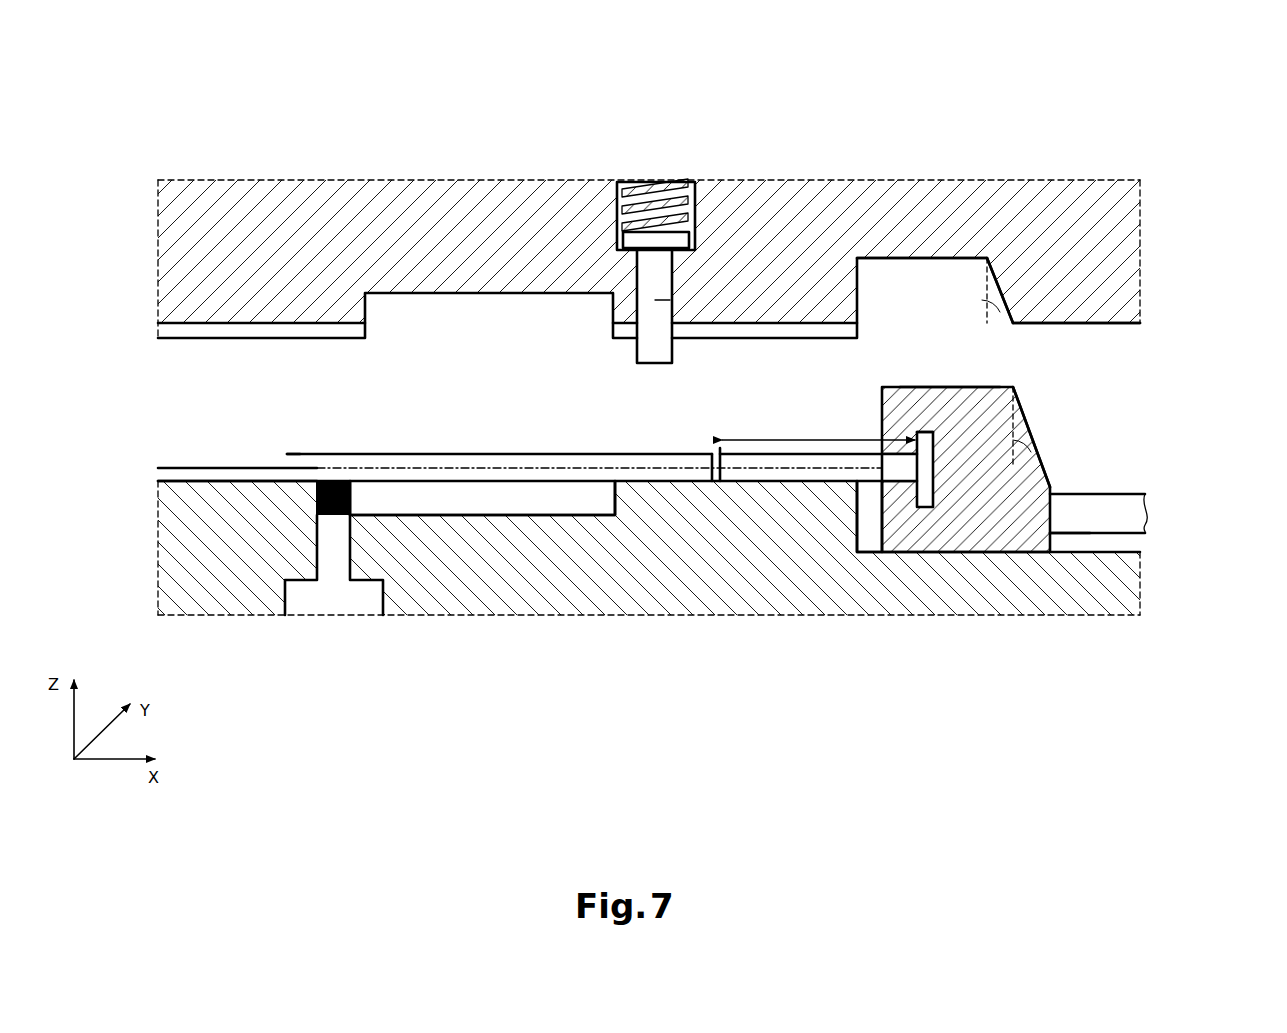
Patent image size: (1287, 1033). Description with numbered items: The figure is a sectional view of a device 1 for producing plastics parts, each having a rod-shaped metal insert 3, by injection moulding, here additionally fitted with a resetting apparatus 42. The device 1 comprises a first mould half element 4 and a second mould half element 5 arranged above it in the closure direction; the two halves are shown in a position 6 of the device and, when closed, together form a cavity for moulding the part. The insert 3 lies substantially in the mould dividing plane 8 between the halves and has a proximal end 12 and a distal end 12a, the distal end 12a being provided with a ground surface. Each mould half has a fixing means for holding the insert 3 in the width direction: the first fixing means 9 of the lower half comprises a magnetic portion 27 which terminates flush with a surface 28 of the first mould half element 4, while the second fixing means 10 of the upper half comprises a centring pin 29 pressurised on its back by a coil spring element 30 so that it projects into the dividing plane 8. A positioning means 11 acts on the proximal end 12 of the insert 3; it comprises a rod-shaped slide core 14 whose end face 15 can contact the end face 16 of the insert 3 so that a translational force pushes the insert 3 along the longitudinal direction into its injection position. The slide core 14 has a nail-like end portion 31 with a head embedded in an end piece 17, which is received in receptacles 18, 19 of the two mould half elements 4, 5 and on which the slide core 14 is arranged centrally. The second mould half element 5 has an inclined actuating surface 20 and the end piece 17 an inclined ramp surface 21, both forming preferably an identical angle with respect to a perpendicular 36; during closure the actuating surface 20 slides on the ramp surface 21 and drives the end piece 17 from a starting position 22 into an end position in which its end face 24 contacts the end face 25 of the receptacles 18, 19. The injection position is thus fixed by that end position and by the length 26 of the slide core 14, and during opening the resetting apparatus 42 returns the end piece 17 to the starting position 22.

The device 1 is at (160, 80).
The rod-shaped metal insert 3 is at (576, 484).
The first mould half element 4 is at (795, 605).
The second mould half element 5 is at (223, 195).
The position of the device 6 is at (203, 365).
The mould dividing plane 8 is at (185, 390).
The first fixing means 9 is at (350, 598).
The second fixing means 10 is at (655, 300).
The positioning means 11 is at (938, 392).
The proximal end 12 is at (707, 472).
The distal end 12a is at (297, 467).
The slide core 14 is at (753, 475).
The end face of the slide core 15 is at (720, 480).
The end face of the insert 16 is at (718, 440).
The end piece 17 is at (992, 533).
The receptacle of the second mould half element 18 is at (873, 268).
The receptacle of the first mould half element 19 is at (870, 540).
The actuating surface 20 is at (1013, 323).
The ramp surface 21 is at (1013, 400).
The starting position 22 is at (1158, 547).
The end face of the end piece 24 is at (872, 405).
The end face of the receptacles 25 is at (857, 318).
The length of the slide core 26 is at (817, 480).
The magnetic portion 27 is at (318, 500).
The surface of the first mould half element 28 is at (178, 472).
The centring pin 29 is at (667, 300).
The spring element 30 is at (651, 182).
The nail-like end portion 31 is at (932, 442).
The perpendicular 36 is at (985, 327).
The resetting apparatus 42 is at (1064, 522).